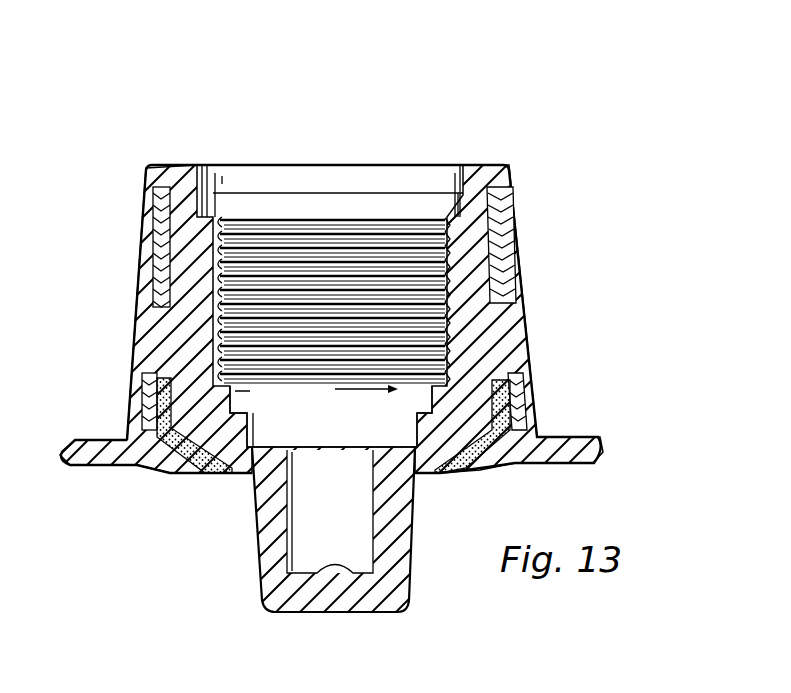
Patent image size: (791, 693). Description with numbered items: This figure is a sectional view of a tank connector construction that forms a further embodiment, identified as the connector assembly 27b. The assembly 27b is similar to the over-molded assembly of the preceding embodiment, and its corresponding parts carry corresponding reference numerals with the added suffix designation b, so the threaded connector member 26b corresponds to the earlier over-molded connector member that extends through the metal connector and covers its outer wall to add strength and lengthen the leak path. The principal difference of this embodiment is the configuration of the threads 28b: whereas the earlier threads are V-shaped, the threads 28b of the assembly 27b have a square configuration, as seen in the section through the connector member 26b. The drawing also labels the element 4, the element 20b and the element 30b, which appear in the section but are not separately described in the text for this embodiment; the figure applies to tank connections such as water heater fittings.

The threaded connector member 26b is at (360, 150).
The connector assembly 27b is at (540, 247).
The threads 28b is at (242, 238).
The metal sleeve 4 is at (530, 394).
The gasket 20b is at (509, 463).
The spigot 30b is at (254, 527).